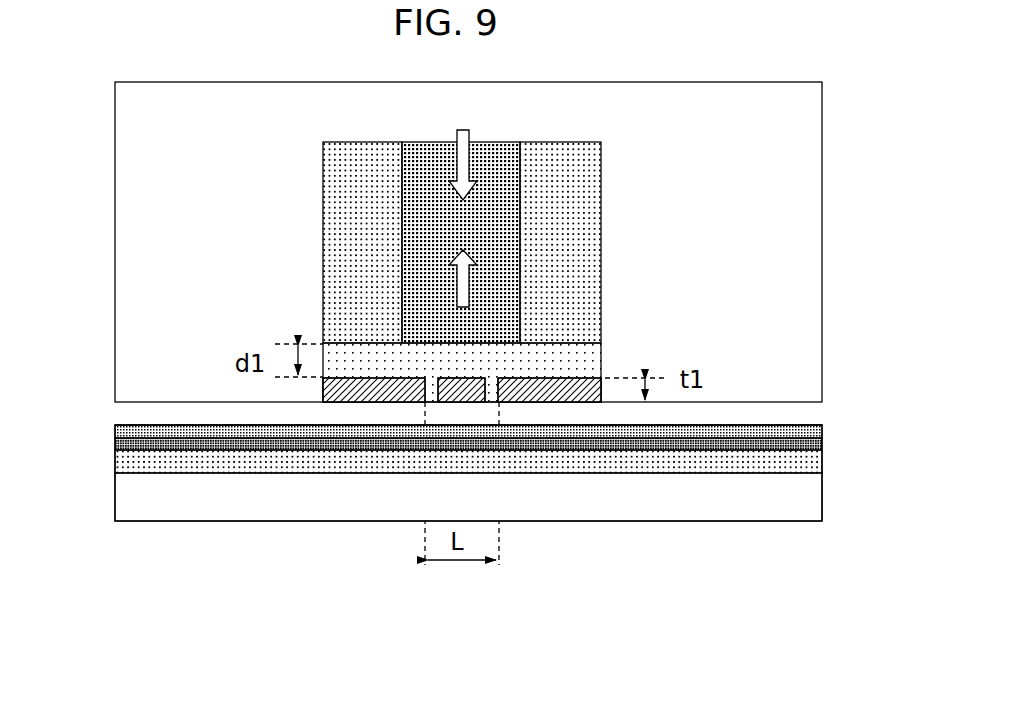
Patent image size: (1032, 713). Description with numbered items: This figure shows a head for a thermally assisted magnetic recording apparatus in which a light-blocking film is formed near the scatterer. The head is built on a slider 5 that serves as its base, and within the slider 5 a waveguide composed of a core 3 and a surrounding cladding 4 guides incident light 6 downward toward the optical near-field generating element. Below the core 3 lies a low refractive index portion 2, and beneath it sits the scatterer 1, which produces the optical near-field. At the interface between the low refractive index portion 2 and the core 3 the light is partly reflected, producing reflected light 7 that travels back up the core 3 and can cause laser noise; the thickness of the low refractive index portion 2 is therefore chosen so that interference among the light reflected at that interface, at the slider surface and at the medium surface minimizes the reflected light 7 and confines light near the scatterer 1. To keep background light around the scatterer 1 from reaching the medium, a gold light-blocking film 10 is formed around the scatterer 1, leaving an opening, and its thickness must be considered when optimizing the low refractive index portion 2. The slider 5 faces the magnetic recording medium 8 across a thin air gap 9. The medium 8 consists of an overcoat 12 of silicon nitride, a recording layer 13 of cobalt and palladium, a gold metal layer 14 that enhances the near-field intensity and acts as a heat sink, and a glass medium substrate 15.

The scatterer 1 is at (470, 393).
The low refractive index portion 2 is at (533, 367).
The core 3 is at (489, 228).
The cladding 4 is at (549, 276).
The slider 5 is at (152, 155).
The incident light 6 is at (452, 120).
The reflected light 7 is at (447, 280).
The magnetic recording medium 8 is at (428, 515).
The air gap 9 is at (618, 414).
The light-blocking film 10 is at (578, 392).
The overcoat 12 is at (564, 432).
The recording layer 13 is at (305, 443).
The metal layer 14 is at (219, 463).
The medium substrate 15 is at (151, 493).